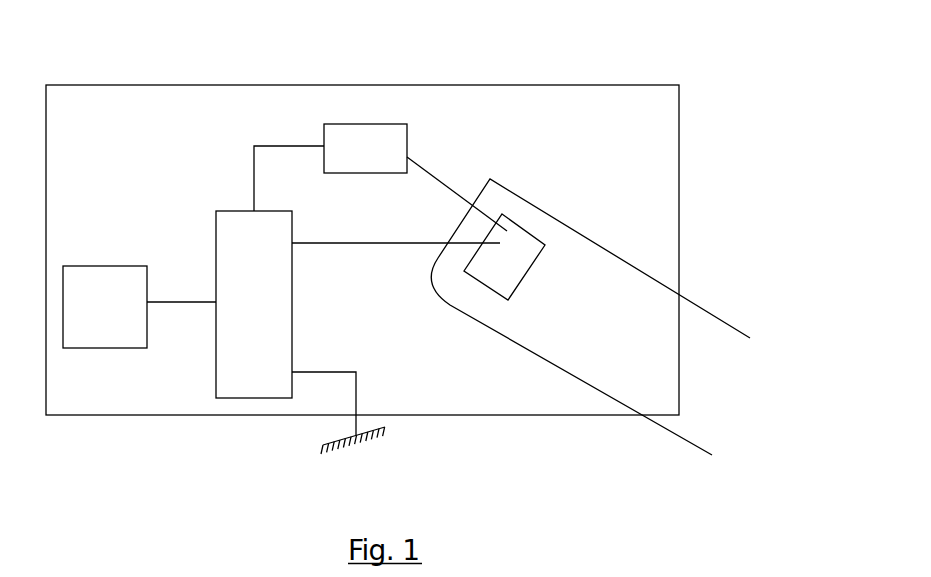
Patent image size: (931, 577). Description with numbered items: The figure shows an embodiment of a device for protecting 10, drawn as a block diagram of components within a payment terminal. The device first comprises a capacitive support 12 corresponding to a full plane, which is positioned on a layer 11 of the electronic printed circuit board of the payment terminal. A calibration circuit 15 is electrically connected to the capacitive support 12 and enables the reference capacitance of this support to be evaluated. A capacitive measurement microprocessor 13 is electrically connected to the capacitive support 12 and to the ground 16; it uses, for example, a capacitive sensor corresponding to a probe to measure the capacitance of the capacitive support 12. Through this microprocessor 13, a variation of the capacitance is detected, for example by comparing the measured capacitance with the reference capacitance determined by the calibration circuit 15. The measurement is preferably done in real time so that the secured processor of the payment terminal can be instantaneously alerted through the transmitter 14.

The device for protecting 10 is at (578, 415).
The layer 11 is at (610, 293).
The capacitive support 12 is at (520, 243).
The capacitive measurement microprocessor 13 is at (253, 328).
The transmitter 14 is at (100, 328).
The calibration circuit 15 is at (370, 137).
The ground 16 is at (387, 428).